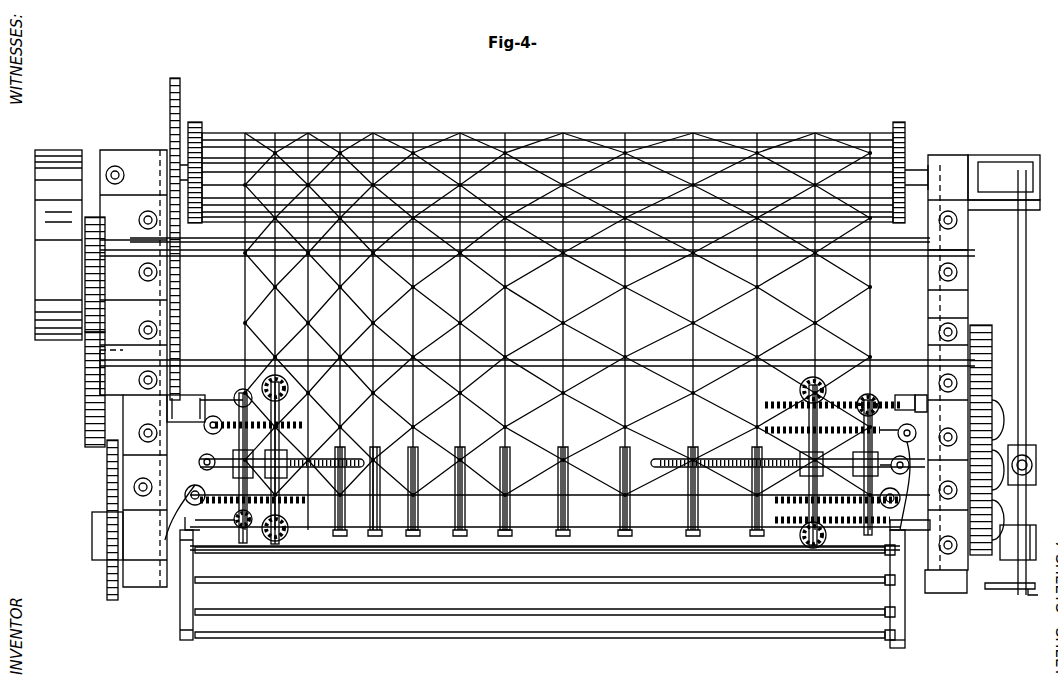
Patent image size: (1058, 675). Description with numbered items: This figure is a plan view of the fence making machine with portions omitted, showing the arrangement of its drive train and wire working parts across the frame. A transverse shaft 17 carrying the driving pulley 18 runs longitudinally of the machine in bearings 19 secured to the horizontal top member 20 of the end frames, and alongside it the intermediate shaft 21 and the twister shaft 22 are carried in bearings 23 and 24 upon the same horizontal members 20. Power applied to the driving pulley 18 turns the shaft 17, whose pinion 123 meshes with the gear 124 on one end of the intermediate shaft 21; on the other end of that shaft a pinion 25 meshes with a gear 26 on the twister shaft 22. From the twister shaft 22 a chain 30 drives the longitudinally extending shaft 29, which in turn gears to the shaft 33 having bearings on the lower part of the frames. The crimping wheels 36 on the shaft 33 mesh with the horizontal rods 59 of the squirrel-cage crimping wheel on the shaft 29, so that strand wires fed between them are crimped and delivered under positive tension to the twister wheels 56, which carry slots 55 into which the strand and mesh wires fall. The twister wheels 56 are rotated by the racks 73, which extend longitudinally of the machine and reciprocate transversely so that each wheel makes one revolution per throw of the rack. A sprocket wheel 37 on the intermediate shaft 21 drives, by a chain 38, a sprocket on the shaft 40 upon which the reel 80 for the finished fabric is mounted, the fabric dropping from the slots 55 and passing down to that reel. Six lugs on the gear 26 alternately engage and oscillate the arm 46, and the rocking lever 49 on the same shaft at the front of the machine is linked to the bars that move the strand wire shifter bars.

The transverse shaft 17 is at (201, 250).
The driving pulley 18 is at (50, 253).
The bearings 19 is at (138, 220).
The horizontal top member 20 is at (980, 298).
The intermediate shaft 21 is at (214, 358).
The twister shaft 22 is at (345, 457).
The bearing 23 is at (138, 330).
The bearing 24 is at (157, 444).
The pinion 25 is at (992, 342).
The gear 26 is at (985, 425).
The longitudinally extending shaft 29 is at (181, 588).
The chain 30 is at (107, 483).
The shaft 33 is at (419, 480).
The crimping wheels 36 is at (510, 480).
The sprocket wheel 37 is at (180, 340).
The chain 38 is at (178, 233).
The shaft 40 is at (182, 165).
The arm 46 is at (1030, 448).
The rocking lever 49 is at (990, 590).
The slots 55 is at (276, 543).
The twister wheels 56 is at (246, 540).
The horizontal rods 59 is at (292, 633).
The rack 73 is at (840, 406).
The reel 80 is at (230, 133).
The pinion 123 is at (97, 217).
The gear 124 is at (85, 423).